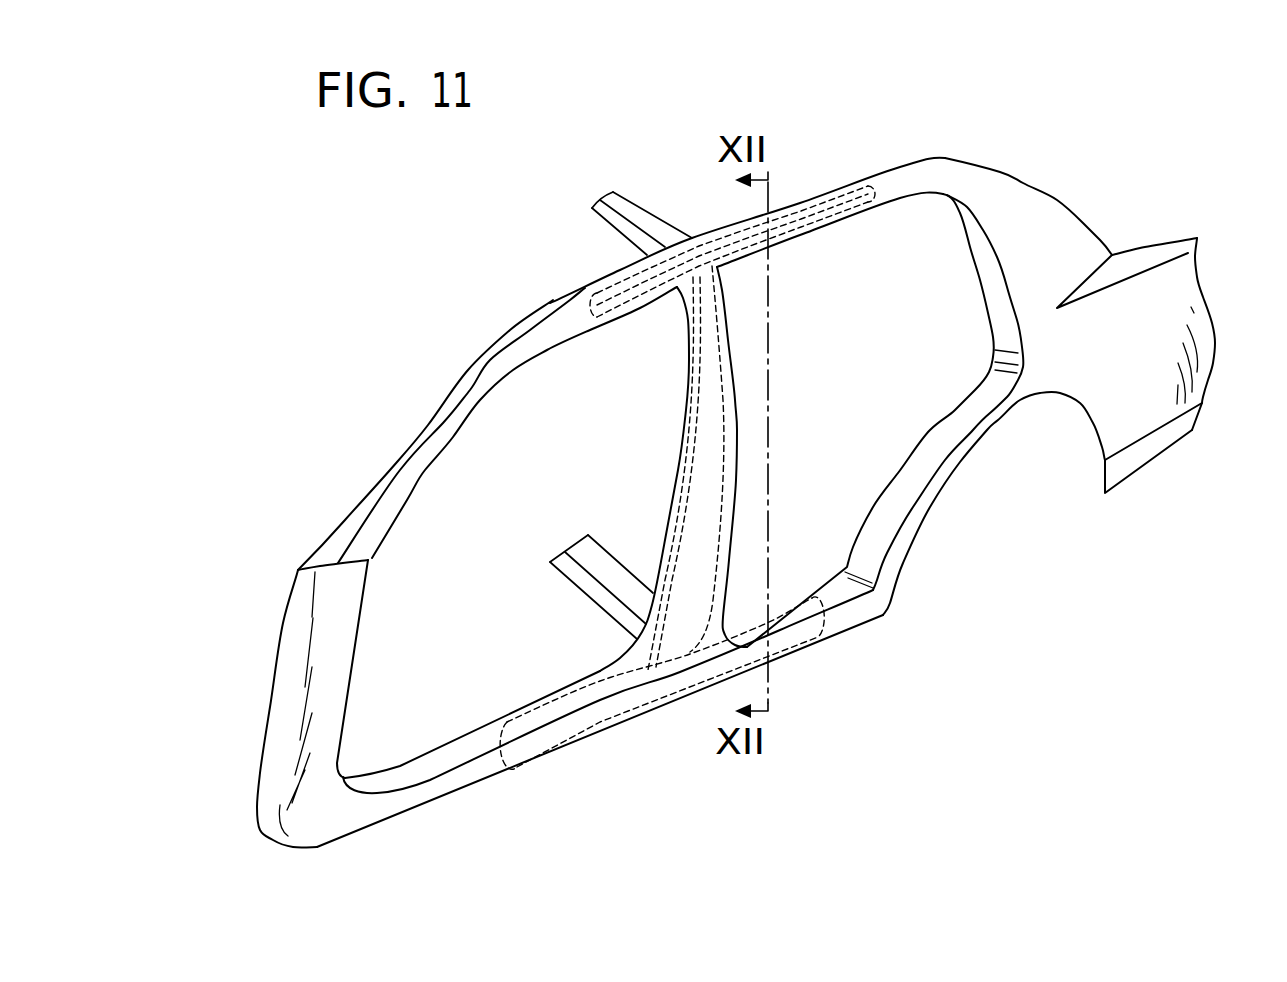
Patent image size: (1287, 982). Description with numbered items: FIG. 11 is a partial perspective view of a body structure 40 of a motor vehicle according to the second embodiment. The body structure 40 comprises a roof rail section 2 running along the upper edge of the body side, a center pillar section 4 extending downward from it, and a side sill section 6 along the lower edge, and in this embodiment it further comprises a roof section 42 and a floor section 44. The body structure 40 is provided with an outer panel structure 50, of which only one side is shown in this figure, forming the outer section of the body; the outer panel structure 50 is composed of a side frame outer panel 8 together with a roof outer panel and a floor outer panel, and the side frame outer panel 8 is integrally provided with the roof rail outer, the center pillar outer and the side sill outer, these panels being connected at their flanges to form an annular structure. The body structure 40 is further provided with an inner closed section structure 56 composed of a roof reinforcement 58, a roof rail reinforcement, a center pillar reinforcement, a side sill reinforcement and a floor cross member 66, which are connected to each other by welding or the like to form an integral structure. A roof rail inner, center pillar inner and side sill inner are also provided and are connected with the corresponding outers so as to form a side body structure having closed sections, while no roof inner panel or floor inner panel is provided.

The roof rail section 2 is at (842, 243).
The center pillar section 4 is at (659, 405).
The side sill section 6 is at (578, 780).
The side frame outer panel 8 is at (1008, 175).
The body structure 40 is at (882, 146).
The roof section 42 is at (636, 179).
The floor section 44 is at (529, 601).
The outer panel structure 50 is at (1071, 187).
The inner closed section structure 56 is at (582, 548).
The roof reinforcement 58 is at (642, 205).
The floor cross member 66 is at (607, 556).